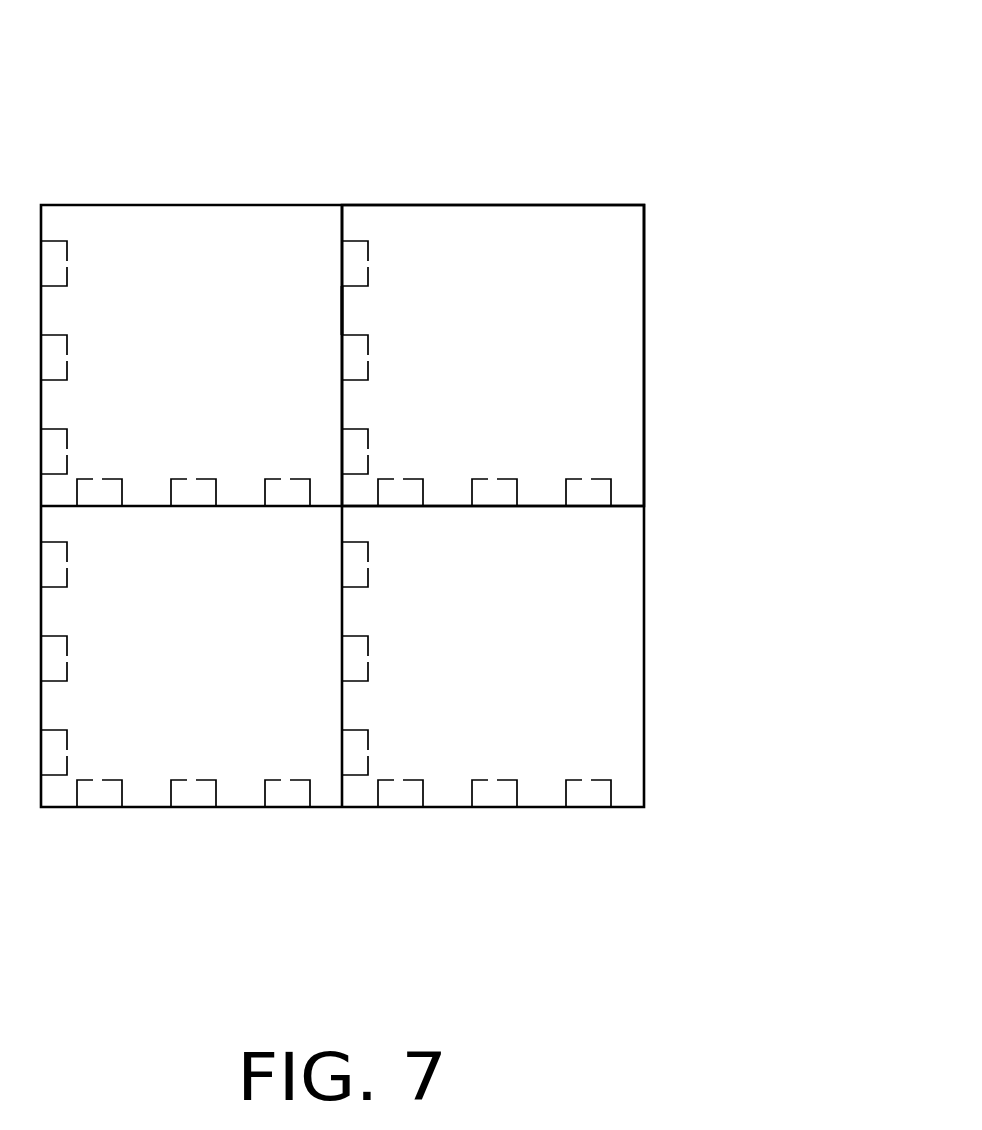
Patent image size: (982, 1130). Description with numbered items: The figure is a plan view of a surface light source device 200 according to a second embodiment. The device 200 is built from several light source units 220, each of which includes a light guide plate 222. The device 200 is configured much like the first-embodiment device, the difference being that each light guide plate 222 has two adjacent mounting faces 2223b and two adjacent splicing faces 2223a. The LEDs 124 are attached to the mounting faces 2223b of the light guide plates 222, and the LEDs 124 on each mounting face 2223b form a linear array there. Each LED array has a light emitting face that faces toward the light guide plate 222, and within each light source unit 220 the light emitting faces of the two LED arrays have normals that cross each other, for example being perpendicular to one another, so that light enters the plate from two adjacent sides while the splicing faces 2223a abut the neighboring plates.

The surface light source device 200 is at (350, 47).
The light source unit 220 is at (767, 277).
The light guide plate 222 is at (550, 360).
The LEDs 124 is at (500, 492).
The splicing face 2223a is at (342, 352).
The mounting face 2223b is at (343, 317).